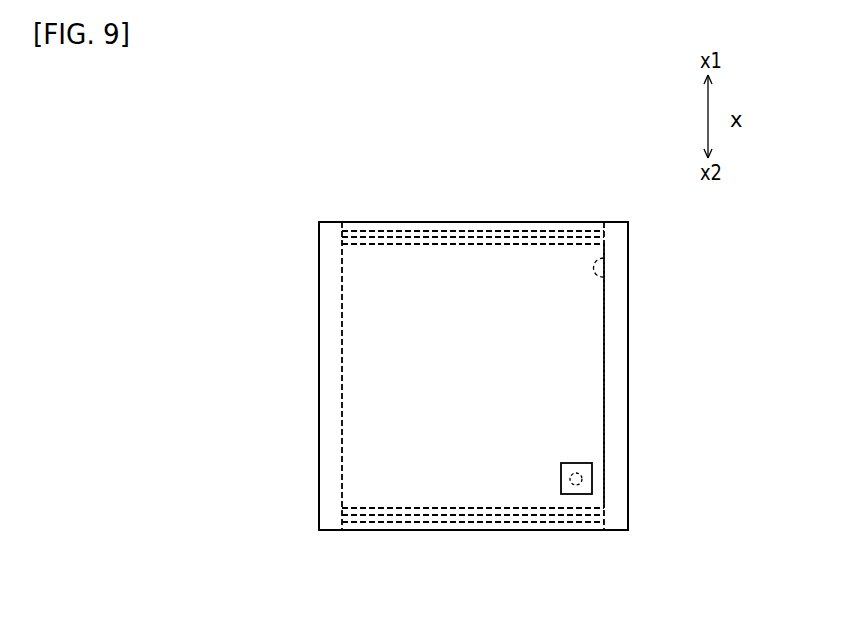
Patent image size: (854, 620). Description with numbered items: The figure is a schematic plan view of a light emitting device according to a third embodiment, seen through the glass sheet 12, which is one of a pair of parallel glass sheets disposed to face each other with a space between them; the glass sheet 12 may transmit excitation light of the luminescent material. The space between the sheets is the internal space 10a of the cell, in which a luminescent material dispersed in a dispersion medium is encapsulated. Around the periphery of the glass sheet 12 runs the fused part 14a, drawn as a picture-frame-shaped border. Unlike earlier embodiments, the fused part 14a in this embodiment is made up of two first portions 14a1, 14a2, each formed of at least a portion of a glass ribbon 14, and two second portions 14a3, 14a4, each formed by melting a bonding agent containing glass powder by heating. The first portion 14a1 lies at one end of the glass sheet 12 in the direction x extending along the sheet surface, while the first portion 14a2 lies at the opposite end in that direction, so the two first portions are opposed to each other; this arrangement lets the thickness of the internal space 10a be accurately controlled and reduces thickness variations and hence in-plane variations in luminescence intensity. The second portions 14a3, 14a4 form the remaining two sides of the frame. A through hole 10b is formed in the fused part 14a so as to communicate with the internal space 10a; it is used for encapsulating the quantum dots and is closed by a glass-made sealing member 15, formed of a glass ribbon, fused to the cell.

The glass ribbon 14 is at (562, 222).
The fused part 14a is at (643, 377).
The first portion 14a1 is at (456, 228).
The first portion 14a2 is at (468, 523).
The second portion 14a3 is at (319, 410).
The second portion 14a4 is at (628, 437).
The glass sheet 12 is at (585, 318).
The internal space 10a is at (604, 277).
The through hole 10b is at (577, 486).
The sealing member 15 is at (592, 478).